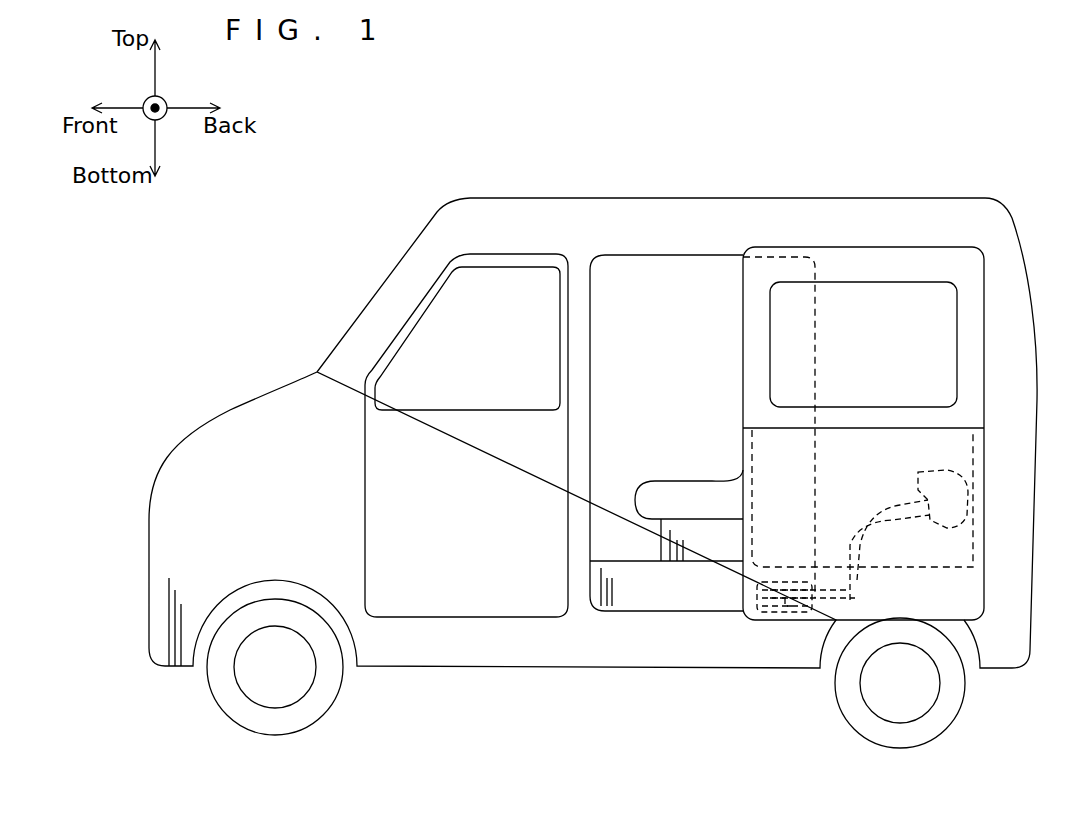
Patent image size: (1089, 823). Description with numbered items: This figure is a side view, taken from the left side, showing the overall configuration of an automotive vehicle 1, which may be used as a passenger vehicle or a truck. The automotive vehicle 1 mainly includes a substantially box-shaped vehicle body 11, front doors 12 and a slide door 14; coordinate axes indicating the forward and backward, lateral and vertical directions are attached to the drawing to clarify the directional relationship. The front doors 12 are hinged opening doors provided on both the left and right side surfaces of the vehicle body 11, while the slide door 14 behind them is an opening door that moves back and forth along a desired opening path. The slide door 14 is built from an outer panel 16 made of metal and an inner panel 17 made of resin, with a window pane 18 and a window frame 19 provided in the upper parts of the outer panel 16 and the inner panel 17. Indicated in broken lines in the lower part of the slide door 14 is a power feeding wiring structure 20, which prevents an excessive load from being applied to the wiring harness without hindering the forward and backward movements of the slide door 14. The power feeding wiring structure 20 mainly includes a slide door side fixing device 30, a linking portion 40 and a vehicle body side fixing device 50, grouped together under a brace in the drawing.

The automotive vehicle 1 is at (378, 186).
The vehicle body 11 is at (282, 425).
The front door 12 is at (440, 565).
The slide door 14 is at (841, 445).
The outer panel 16 is at (984, 450).
The inner panel 17 is at (743, 455).
The window pane 18 is at (892, 312).
The window frame 19 is at (743, 340).
The power feeding wiring structure 20 is at (805, 631).
The slide door side fixing device 30 is at (850, 600).
The linking portion 40 is at (812, 605).
The vehicle body side fixing device 50 is at (748, 615).